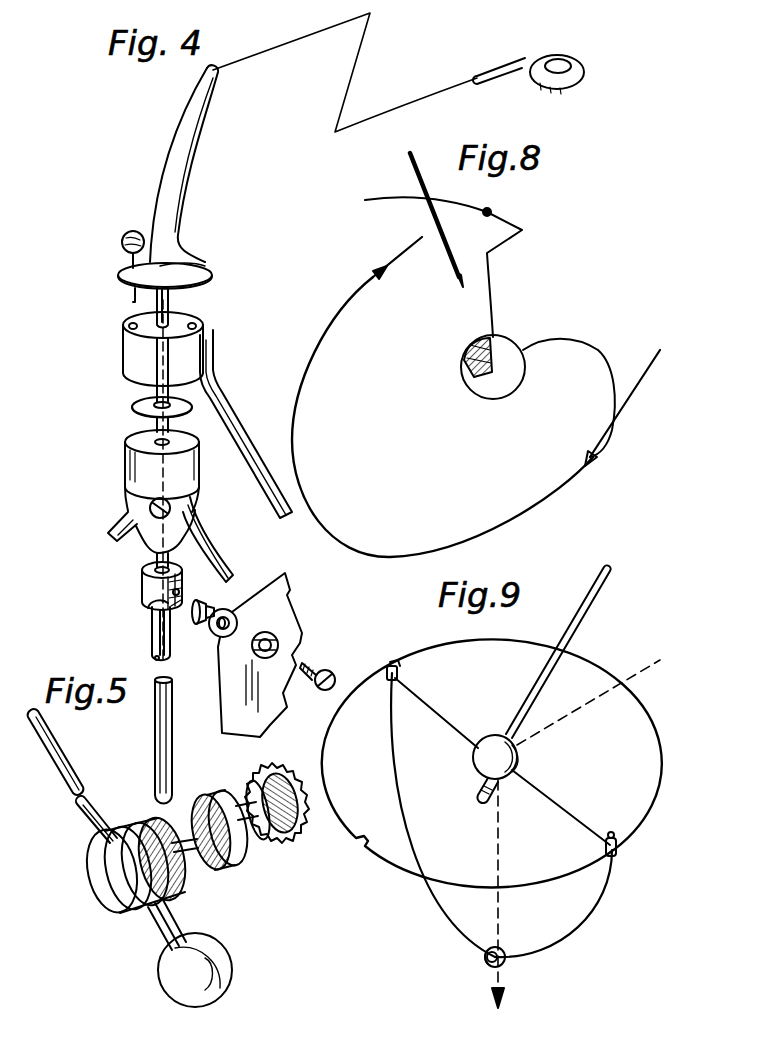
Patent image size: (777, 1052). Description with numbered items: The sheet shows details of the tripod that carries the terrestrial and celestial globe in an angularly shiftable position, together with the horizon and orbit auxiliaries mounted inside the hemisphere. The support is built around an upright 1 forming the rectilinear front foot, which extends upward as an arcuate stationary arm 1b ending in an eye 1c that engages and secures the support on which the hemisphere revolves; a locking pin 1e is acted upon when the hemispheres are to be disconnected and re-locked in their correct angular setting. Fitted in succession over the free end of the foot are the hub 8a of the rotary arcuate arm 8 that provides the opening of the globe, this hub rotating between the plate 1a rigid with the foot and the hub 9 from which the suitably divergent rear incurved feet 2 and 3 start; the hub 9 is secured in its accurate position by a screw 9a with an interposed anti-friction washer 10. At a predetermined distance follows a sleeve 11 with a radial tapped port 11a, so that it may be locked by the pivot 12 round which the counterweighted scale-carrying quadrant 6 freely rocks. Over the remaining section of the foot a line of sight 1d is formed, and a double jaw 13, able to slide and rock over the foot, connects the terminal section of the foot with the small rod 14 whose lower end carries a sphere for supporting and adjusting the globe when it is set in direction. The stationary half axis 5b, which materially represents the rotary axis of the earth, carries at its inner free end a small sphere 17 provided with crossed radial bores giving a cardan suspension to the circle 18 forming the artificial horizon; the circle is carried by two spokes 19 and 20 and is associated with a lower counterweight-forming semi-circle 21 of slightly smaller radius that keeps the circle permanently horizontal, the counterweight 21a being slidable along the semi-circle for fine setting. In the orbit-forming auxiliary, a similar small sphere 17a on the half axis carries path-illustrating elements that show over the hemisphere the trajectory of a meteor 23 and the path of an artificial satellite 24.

In FIG. 5, the upright 1 is at (164, 734).
In FIG. 4, the plate 1a is at (212, 272).
In FIG. 4, the arcuate stationary arm 1b is at (195, 132).
In FIG. 8, the eye 1c is at (586, 76).
In FIG. 5, the line of sight 1d is at (170, 693).
In FIG. 4, the locking pin 1e is at (126, 232).
In FIG. 4, the curvilinear foot 2 is at (123, 520).
In FIG. 4, the curvilinear foot 3 is at (223, 557).
In FIG. 8, the half axis 5b is at (448, 262).
In FIG. 9, the half axis 5b is at (595, 613).
In FIG. 4, the scale-carrying quadrant 6 is at (293, 607).
In FIG. 4, the rotary arcuate arm 8 is at (247, 443).
In FIG. 4, the hub 8a is at (195, 343).
In FIG. 4, the hub 9 is at (130, 453).
In FIG. 4, the screw 9a is at (171, 510).
In FIG. 4, the anti-friction washer 10 is at (130, 400).
In FIG. 4, the sleeve 11 is at (142, 583).
In FIG. 4, the radial tapped port 11a is at (157, 610).
In FIG. 4, the pivot 12 is at (313, 658).
In FIG. 5, the double jaw 13 is at (280, 857).
In FIG. 5, the small rod 14 is at (87, 813).
In FIG. 9, the small sphere 17 is at (520, 767).
In FIG. 8, the ball 17a is at (500, 393).
In FIG. 9, the circle 18 is at (658, 786).
In FIG. 9, the spoke 19 is at (443, 712).
In FIG. 9, the spoke 20 is at (568, 822).
In FIG. 9, the semi-circle 21 is at (545, 955).
In FIG. 9, the counterweight 21a is at (484, 960).
In FIG. 8, the meteor trajectory 23 is at (490, 212).
In FIG. 8, the artificial satellite path 24 is at (608, 347).